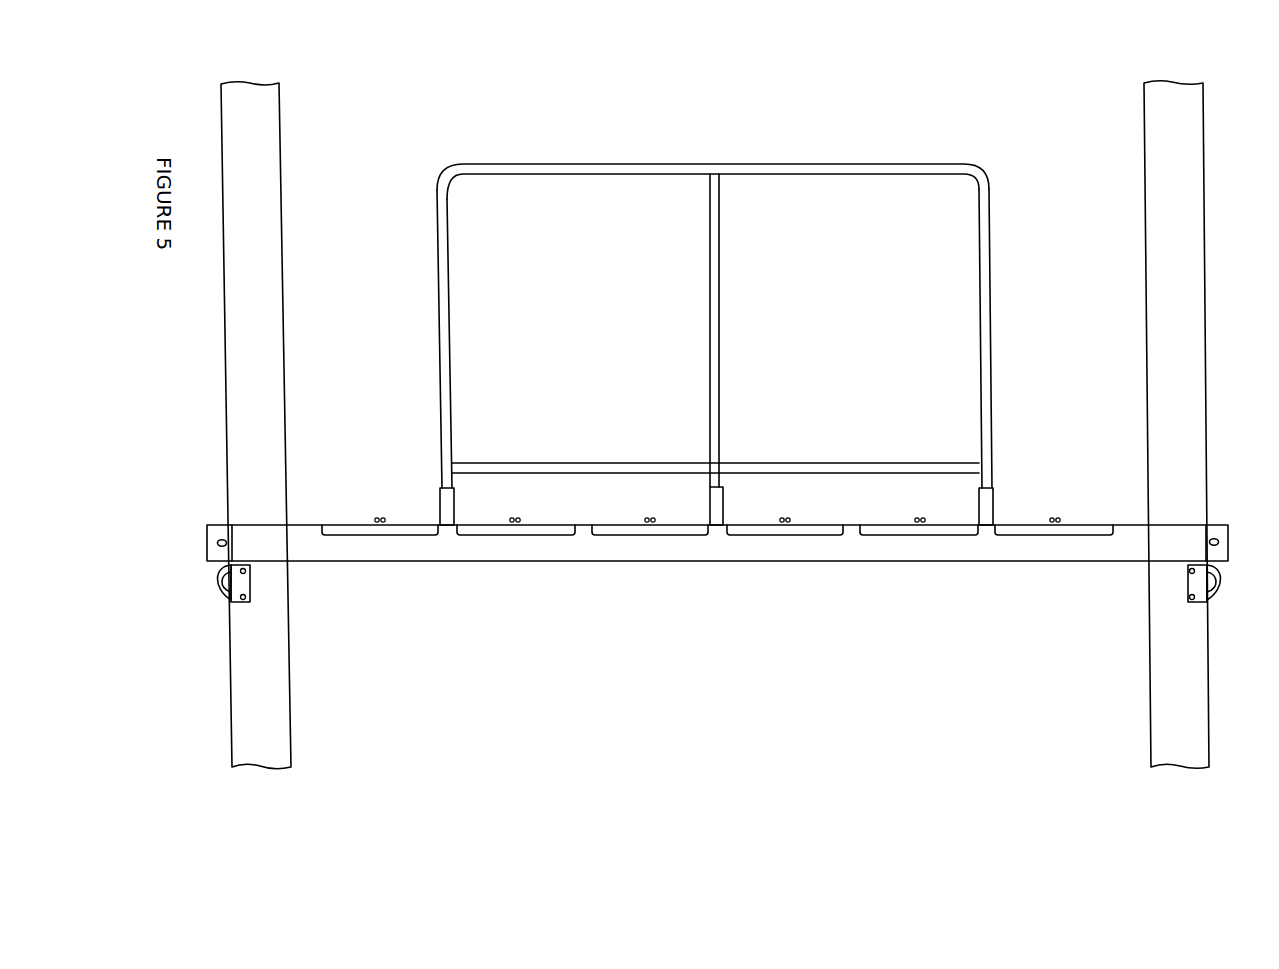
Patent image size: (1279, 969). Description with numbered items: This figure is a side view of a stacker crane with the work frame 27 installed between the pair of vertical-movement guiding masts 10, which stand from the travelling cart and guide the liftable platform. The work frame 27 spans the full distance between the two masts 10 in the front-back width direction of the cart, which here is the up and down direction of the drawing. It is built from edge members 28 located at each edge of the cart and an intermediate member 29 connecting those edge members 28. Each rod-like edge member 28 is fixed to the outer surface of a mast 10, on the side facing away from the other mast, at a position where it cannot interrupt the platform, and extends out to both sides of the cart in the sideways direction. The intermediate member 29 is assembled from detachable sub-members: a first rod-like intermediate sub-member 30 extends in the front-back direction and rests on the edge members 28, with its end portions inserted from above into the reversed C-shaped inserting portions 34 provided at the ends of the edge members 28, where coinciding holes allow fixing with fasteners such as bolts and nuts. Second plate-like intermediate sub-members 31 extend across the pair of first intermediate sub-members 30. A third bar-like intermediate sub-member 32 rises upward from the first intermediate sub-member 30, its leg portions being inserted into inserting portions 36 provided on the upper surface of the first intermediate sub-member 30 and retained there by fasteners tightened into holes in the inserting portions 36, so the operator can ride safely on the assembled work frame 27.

The vertical-movement guiding mast 10 is at (270, 160).
The work frame 27 is at (713, 279).
The edge member 28 is at (215, 585).
The intermediate member 29 is at (723, 558).
The first intermediate sub-member 30 is at (582, 552).
The second plate-like intermediate sub-member 31 is at (490, 535).
The third bar-like intermediate sub-member 32 is at (640, 162).
The inserting portion 34 is at (208, 535).
The inserting portion 36 is at (441, 507).